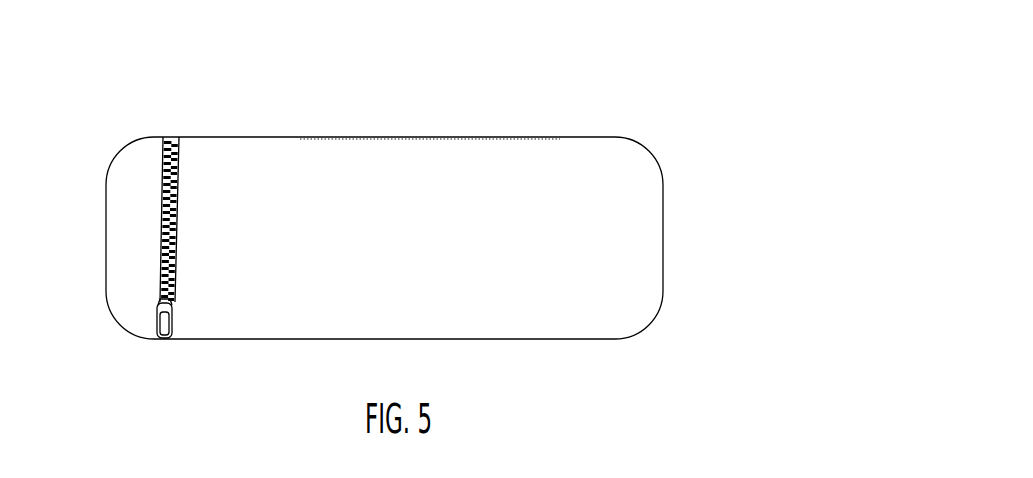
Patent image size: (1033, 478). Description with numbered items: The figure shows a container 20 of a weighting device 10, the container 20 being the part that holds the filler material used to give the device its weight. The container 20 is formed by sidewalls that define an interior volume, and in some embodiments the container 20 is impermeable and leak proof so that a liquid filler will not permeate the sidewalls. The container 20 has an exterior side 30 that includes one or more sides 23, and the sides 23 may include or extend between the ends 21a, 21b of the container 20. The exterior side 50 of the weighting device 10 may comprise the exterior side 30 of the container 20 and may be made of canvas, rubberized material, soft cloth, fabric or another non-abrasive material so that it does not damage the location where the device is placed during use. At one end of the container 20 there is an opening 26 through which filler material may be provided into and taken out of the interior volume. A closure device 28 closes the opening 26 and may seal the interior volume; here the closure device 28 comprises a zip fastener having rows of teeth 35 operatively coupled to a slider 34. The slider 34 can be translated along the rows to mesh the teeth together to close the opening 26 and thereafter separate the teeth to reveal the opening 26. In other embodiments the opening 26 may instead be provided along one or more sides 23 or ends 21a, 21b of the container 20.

The weighting device 10 is at (406, 206).
The container 20 is at (440, 232).
The end 21a is at (224, 132).
The end 21b is at (656, 322).
The side 23 is at (533, 290).
The opening 26 is at (172, 268).
The closure device 28 is at (139, 221).
The exterior side of the container 30 is at (622, 197).
The slider 34 is at (158, 325).
The zipper teeth 35 is at (162, 243).
The exterior side of the weighting device 50 is at (458, 160).